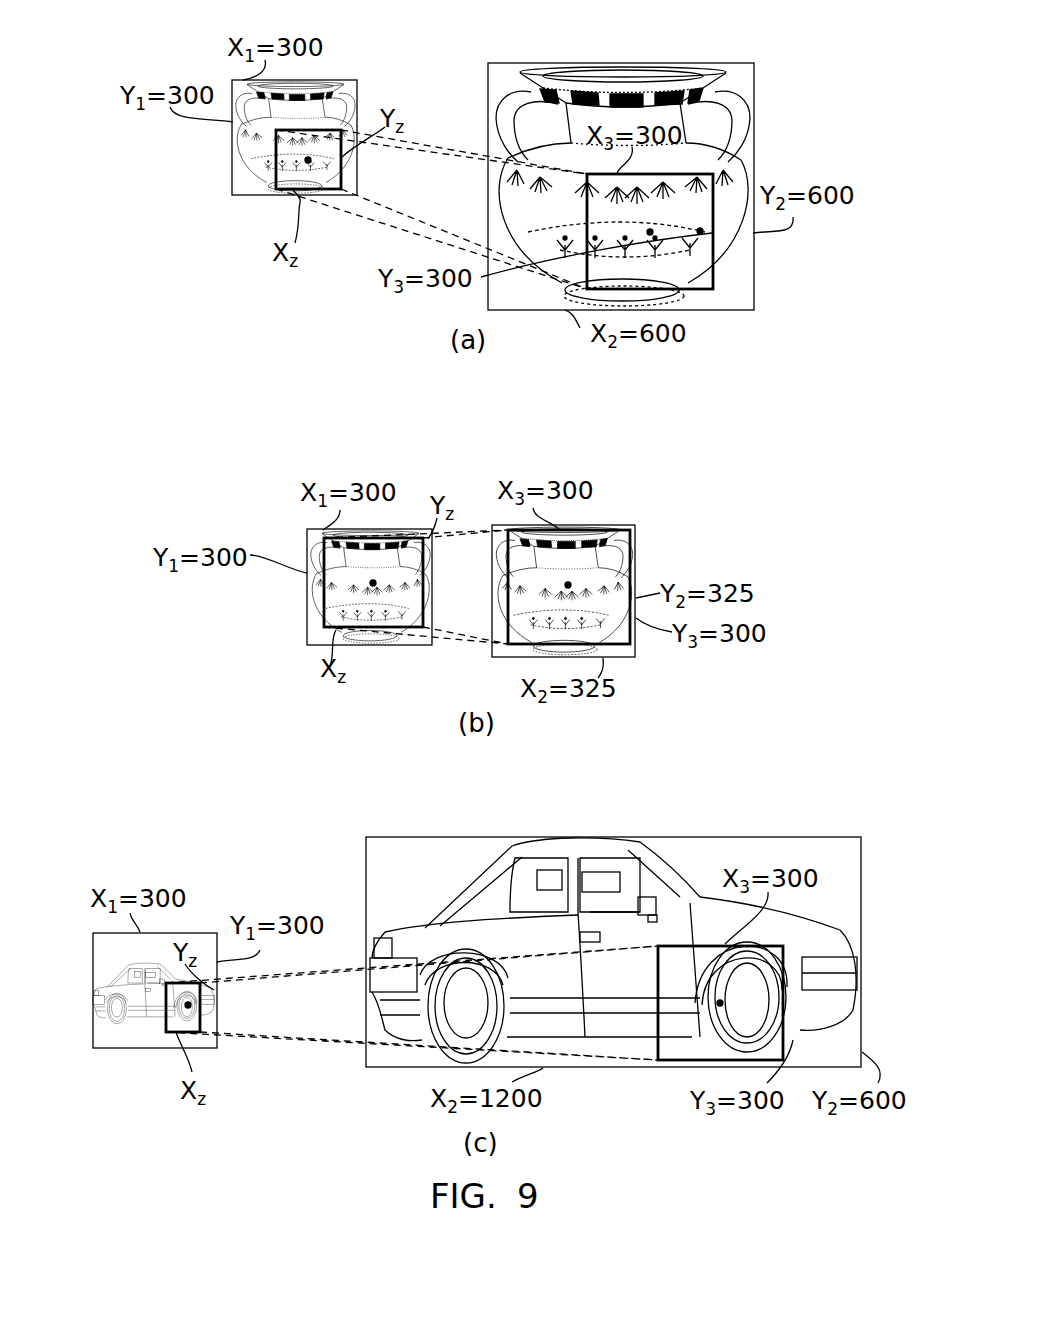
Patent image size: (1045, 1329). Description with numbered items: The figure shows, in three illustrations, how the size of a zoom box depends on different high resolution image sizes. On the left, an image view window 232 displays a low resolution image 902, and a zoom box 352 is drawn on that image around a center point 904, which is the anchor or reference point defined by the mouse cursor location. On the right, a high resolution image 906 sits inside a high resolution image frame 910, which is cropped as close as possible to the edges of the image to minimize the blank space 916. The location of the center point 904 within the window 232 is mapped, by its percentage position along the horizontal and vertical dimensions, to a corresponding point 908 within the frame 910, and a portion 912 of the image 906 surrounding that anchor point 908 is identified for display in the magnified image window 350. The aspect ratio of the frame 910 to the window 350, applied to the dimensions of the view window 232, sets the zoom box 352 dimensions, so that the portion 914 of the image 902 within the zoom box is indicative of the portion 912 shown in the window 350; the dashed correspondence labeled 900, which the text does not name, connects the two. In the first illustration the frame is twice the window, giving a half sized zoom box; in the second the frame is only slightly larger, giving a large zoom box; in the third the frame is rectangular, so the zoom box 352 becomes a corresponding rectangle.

The image view window 232 is at (231, 161).
The low resolution image 902 is at (345, 100).
The zoom box 352 is at (283, 162).
The center point of the zoom box 904 is at (300, 190).
The portion of the image within the zoom box 914 is at (308, 162).
The zoom mapping 900 is at (425, 142).
The high resolution image frame 910 is at (754, 153).
The high resolution image 906 is at (510, 107).
The blank space 916 is at (737, 78).
The magnified image window 350 is at (718, 275).
The corresponding point on the high resolution image 908 is at (703, 232).
The portion of the high resolution image 912 is at (650, 234).